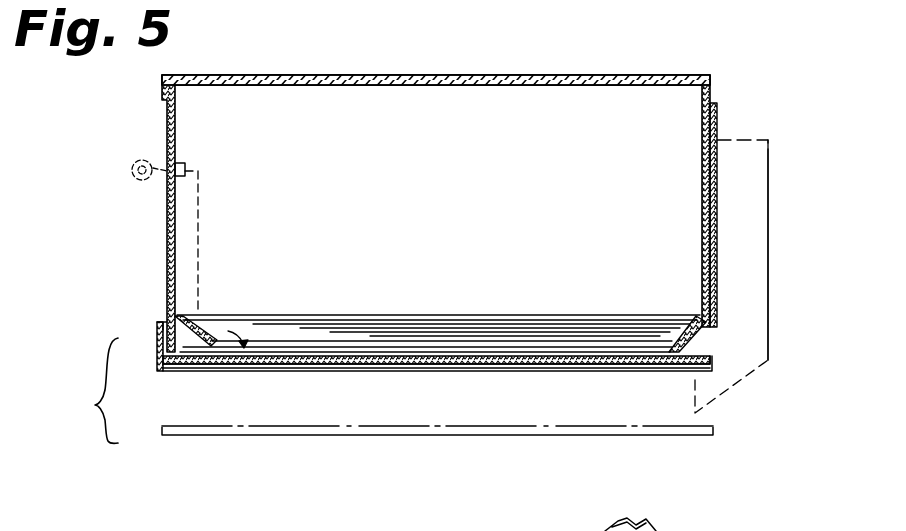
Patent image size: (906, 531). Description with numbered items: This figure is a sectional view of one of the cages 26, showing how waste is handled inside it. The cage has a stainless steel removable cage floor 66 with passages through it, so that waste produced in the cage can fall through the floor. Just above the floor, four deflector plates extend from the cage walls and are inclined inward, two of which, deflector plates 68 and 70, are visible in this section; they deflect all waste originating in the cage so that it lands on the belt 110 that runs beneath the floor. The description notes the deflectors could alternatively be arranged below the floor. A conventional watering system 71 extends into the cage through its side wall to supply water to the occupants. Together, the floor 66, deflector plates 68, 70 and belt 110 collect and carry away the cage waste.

The housing 26 is at (681, 14).
The removable cage floor 66 is at (470, 365).
The deflector plate 68 is at (692, 348).
The deflector plate 70 is at (162, 324).
The watering system 71 is at (134, 180).
The belt 110 is at (482, 436).